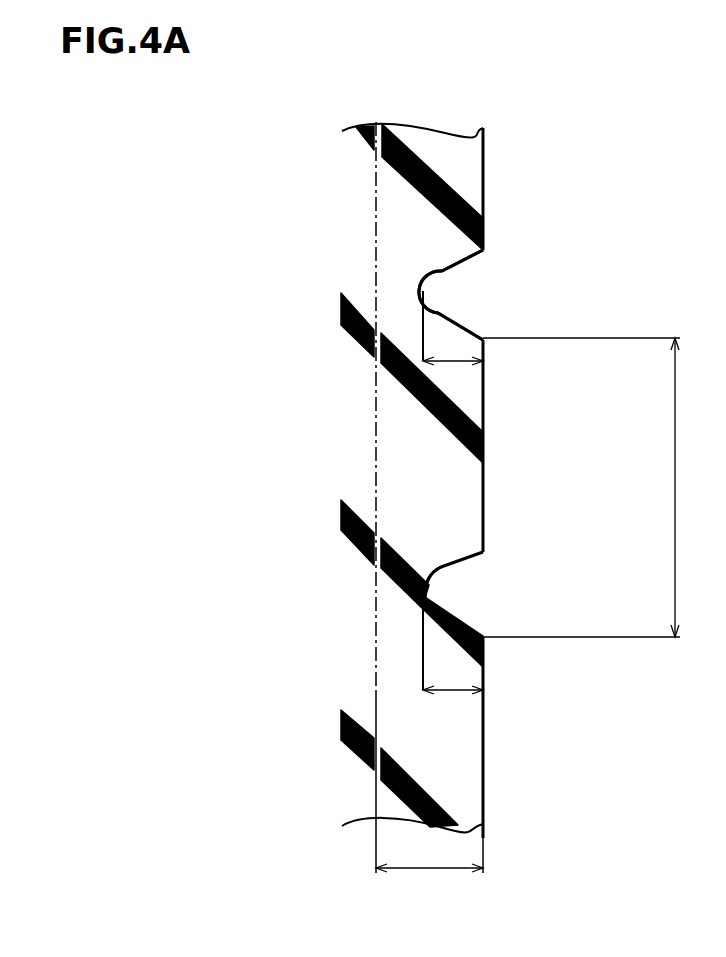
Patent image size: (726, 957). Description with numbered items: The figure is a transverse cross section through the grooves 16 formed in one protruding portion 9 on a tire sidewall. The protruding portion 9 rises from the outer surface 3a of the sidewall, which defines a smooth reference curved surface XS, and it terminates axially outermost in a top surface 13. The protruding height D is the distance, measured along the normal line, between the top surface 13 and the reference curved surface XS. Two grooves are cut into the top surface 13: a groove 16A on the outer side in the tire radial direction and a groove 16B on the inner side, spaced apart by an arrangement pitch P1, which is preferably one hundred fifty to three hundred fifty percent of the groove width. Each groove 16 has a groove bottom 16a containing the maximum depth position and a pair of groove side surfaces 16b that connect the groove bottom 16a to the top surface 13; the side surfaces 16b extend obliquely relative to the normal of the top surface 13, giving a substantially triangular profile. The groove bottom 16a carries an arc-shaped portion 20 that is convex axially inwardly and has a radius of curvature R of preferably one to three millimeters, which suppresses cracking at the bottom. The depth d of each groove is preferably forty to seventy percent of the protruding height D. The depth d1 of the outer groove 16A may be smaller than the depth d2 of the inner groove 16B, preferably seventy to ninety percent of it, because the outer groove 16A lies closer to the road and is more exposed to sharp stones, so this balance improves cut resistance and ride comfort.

The top surface 13 is at (483, 160).
The groove 16 is at (560, 469).
The groove on the outer side in the tire radial direction 16A is at (470, 294).
The groove on the inner side in the tire radial direction 16B is at (476, 572).
The groove side surfaces 16b is at (463, 259).
The groove bottom 16a is at (311, 276).
The arc-shaped portion 20 is at (423, 293).
The protruding portion 9 is at (403, 452).
The reference curved surface XS is at (288, 668).
The outer surface 3a is at (377, 650).
The depth d is at (517, 384).
The depth of the groove on the outer side d1 is at (453, 362).
The depth of the groove on the inner side d2 is at (453, 690).
The arrangement pitch P1 is at (600, 487).
The radius of curvature R is at (427, 600).
The protruding height D is at (429, 874).